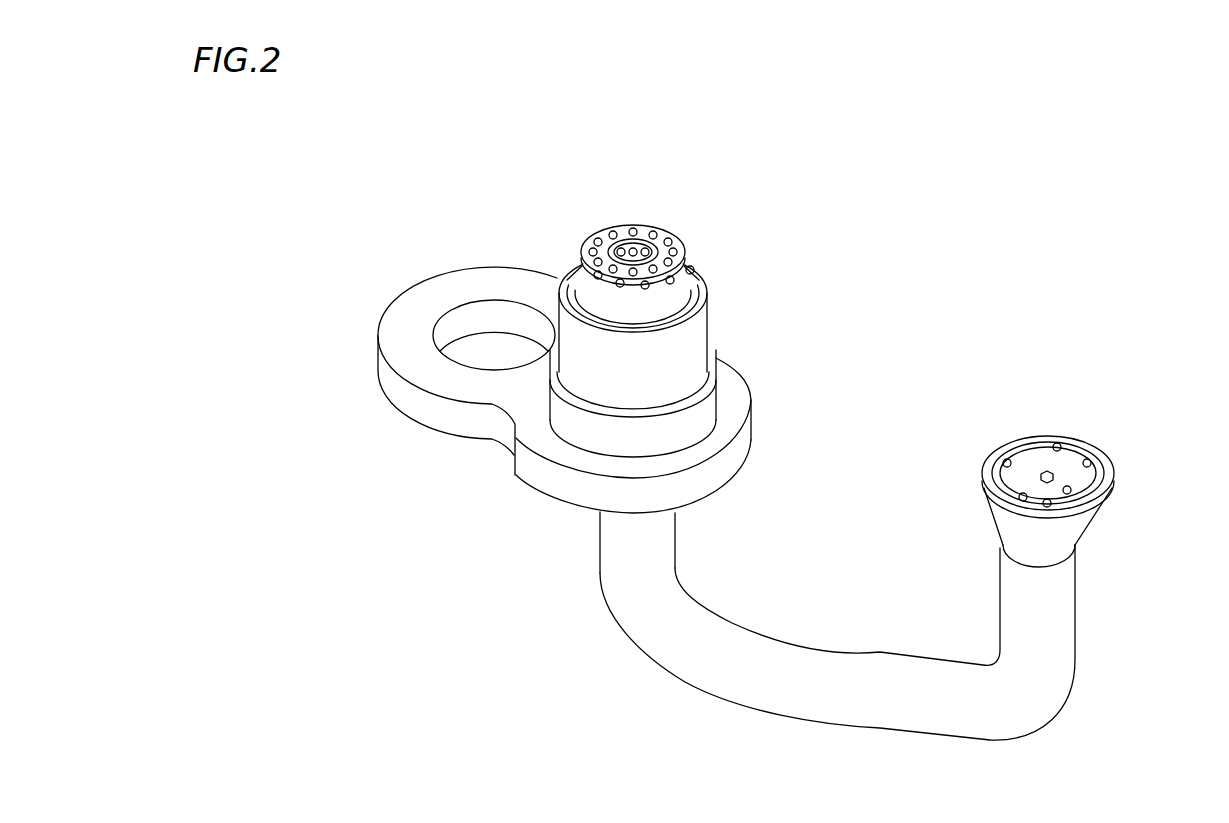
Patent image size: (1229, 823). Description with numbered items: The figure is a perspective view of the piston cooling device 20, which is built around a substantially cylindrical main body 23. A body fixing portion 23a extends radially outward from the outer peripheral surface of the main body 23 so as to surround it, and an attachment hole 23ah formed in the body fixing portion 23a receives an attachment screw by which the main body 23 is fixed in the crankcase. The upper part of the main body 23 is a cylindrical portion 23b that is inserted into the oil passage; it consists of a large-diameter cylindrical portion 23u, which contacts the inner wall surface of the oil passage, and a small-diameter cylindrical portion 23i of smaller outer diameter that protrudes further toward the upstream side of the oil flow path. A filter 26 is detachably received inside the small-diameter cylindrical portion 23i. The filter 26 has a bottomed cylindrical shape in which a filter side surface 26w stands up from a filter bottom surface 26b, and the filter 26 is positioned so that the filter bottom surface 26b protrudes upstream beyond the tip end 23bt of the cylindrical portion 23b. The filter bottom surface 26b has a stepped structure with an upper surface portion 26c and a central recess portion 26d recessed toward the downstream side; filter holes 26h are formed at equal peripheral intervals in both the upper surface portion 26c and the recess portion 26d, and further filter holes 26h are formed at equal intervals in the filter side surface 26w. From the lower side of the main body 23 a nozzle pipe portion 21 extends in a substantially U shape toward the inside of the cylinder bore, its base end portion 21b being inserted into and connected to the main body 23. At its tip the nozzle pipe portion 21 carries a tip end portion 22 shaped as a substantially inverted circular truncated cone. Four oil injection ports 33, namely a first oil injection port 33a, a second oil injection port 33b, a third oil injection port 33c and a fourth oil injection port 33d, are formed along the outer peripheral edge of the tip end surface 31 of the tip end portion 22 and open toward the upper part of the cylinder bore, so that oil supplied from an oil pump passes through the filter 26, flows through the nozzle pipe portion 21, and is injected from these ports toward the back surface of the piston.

The piston cooling device 20 is at (943, 291).
The nozzle pipe portion 21 is at (860, 660).
The base end portion 21b is at (676, 525).
The tip end portion 22 is at (1010, 433).
The main body 23 is at (757, 442).
The body fixing portion 23a is at (447, 283).
The attachment hole 23ah is at (503, 303).
The cylindrical portion 23b is at (845, 298).
The tip end of the cylindrical portion 23bt is at (706, 282).
The small-diameter cylindrical portion 23i is at (706, 336).
The large-diameter cylindrical portion 23u is at (710, 404).
The filter 26 is at (703, 226).
The filter bottom surface 26b is at (690, 128).
The upper surface portion 26c is at (656, 232).
The recess portion 26d is at (621, 236).
The filter holes 26h is at (594, 236).
The filter side surface 26w is at (698, 270).
The tip end surface 31 is at (1043, 497).
The oil injection ports 33 is at (1165, 318).
The first oil injection port 33a is at (1084, 454).
The second oil injection port 33b is at (1098, 453).
The third oil injection port 33c is at (1072, 483).
The fourth oil injection port 33d is at (1033, 445).